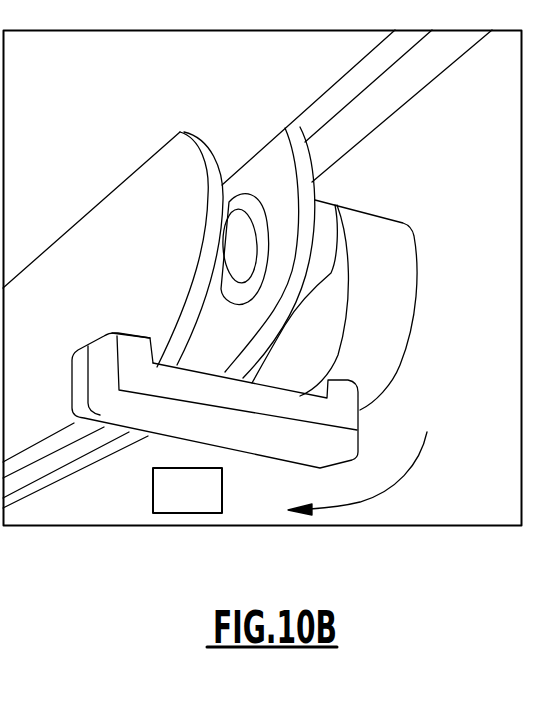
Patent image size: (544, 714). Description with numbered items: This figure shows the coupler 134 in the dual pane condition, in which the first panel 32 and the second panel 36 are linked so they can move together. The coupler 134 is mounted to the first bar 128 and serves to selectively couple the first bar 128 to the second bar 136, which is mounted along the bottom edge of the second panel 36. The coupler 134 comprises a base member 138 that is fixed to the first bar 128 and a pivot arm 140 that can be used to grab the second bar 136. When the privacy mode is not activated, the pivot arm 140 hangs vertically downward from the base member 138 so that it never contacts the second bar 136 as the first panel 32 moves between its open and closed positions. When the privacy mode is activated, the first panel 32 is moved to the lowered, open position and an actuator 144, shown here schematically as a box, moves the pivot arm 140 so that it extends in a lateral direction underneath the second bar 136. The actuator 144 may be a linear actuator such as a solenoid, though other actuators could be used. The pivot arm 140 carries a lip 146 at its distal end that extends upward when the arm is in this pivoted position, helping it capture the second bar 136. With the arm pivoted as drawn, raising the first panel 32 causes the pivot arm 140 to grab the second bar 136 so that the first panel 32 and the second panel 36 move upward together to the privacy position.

The second panel 36 is at (257, 84).
The first panel 32 is at (429, 63).
The first bar 128 is at (285, 197).
The coupler 134 is at (449, 254).
The second bar 136 is at (68, 258).
The base member 138 is at (395, 337).
The pivot arm 140 is at (215, 382).
The actuator 144 is at (247, 452).
The lip 146 is at (140, 336).